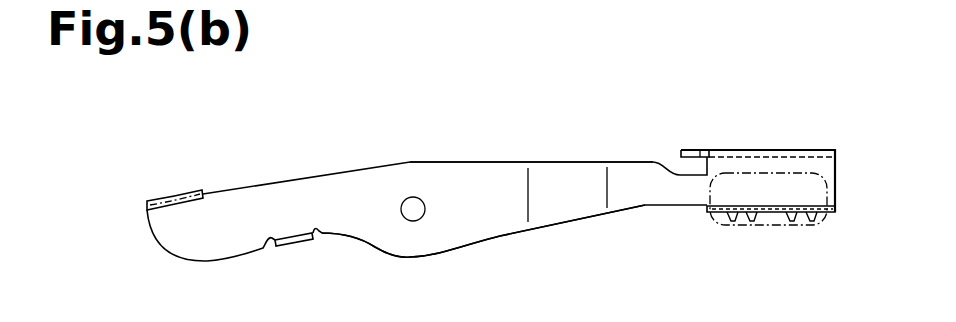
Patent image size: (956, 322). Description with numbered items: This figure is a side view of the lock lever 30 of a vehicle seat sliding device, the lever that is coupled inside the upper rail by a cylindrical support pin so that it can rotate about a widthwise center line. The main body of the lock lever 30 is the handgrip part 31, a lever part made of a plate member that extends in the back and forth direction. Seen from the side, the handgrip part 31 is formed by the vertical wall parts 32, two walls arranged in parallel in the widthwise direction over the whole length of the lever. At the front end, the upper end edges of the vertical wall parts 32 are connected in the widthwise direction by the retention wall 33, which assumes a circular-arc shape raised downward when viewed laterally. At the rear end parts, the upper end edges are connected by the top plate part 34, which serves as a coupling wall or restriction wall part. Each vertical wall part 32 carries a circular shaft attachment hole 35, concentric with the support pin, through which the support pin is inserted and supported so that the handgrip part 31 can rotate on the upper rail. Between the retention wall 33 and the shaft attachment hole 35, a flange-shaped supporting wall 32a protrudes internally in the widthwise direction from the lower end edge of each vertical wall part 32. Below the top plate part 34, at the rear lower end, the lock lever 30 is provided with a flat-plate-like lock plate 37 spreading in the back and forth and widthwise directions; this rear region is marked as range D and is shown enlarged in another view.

The lock lever 30 is at (637, 130).
The handgrip part 31 is at (495, 177).
The vertical wall part 32 is at (445, 232).
The supporting wall 32a is at (291, 247).
The retention wall 33 is at (168, 195).
The top plate part 34 is at (687, 149).
The shaft attachment hole 35 is at (404, 215).
The lock plate 37 is at (770, 213).
The range D is at (715, 221).